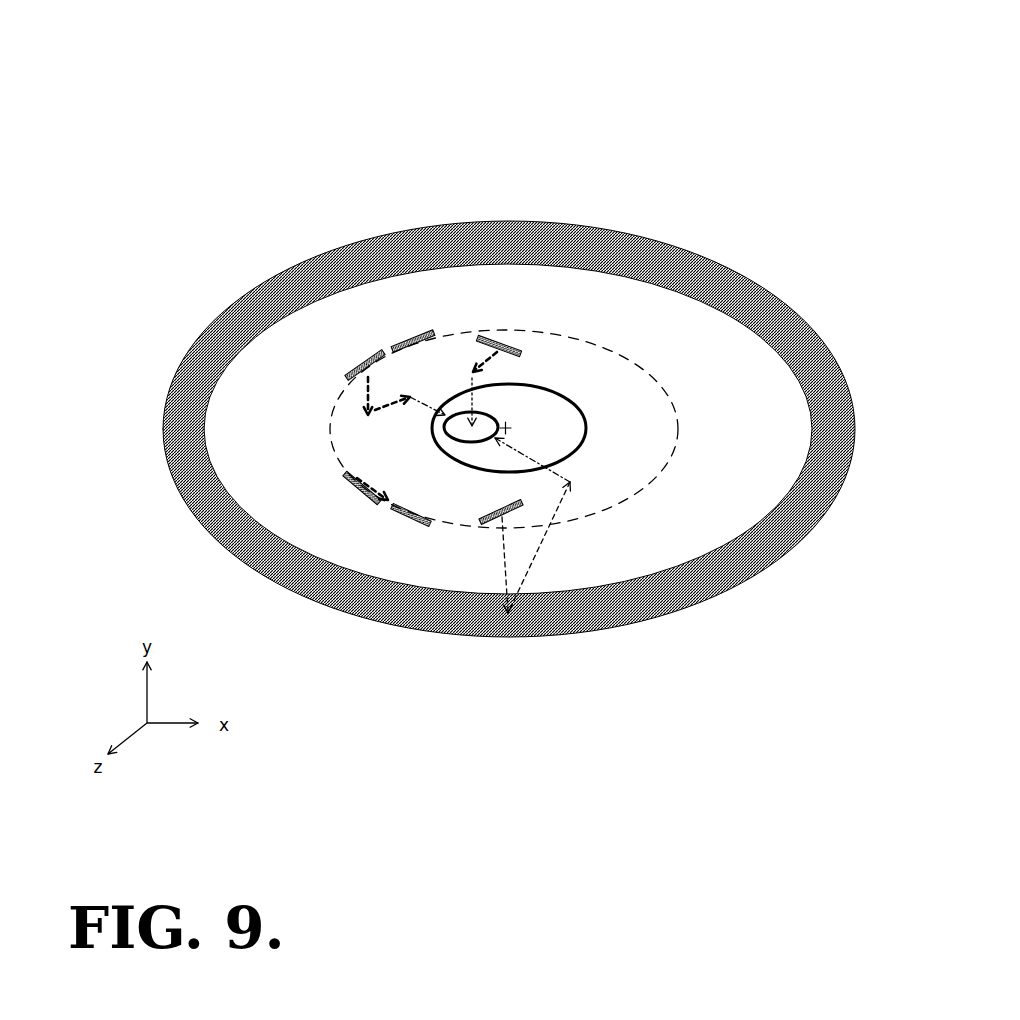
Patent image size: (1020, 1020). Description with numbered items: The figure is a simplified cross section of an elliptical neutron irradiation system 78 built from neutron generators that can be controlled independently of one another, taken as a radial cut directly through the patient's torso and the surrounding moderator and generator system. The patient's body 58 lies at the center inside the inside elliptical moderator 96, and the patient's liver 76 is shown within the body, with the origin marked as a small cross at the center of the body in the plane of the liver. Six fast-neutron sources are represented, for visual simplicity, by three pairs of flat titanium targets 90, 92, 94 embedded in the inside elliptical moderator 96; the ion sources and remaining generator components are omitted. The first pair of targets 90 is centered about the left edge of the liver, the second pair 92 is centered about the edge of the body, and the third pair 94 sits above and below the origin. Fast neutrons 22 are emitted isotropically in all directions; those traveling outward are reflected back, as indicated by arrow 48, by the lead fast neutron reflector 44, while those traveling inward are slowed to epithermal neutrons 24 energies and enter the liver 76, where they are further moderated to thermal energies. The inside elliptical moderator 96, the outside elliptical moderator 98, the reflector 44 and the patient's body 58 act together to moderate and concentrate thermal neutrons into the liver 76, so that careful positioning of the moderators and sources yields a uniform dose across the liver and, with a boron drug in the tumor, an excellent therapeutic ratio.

The fast neutrons 22 is at (368, 396).
The epithermal neutrons 24 is at (466, 412).
The fast neutron reflector 44 is at (783, 538).
The arrow 48 is at (535, 557).
The patient's body 58 is at (567, 395).
The liver 76 is at (483, 417).
The neutron irradiation system 78 is at (465, 95).
The titanium targets 90 is at (365, 356).
The titanium targets 92 is at (412, 338).
The titanium targets 94 is at (487, 334).
The inside elliptical moderator 96 is at (631, 449).
The outside elliptical moderator 98 is at (620, 545).